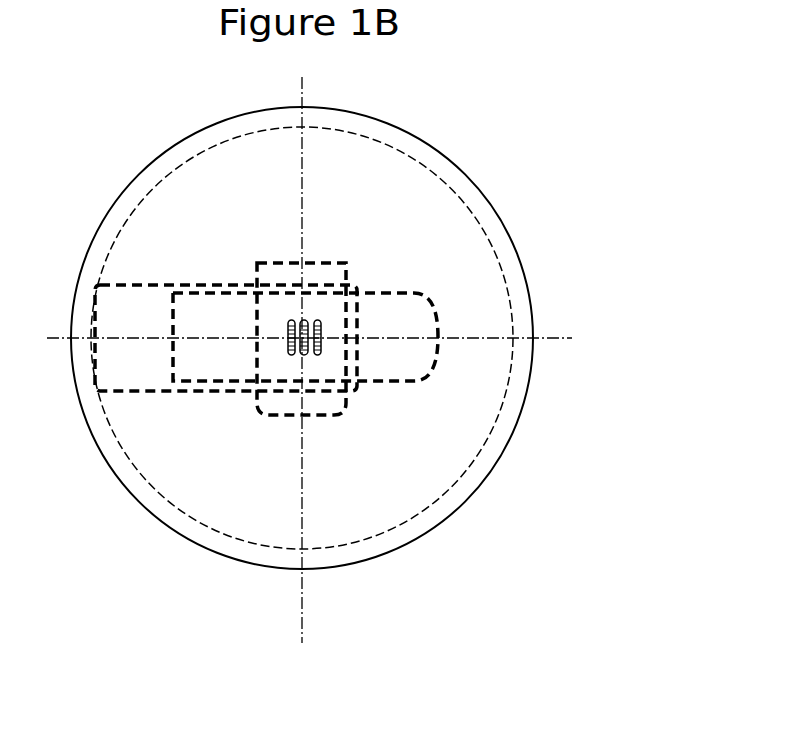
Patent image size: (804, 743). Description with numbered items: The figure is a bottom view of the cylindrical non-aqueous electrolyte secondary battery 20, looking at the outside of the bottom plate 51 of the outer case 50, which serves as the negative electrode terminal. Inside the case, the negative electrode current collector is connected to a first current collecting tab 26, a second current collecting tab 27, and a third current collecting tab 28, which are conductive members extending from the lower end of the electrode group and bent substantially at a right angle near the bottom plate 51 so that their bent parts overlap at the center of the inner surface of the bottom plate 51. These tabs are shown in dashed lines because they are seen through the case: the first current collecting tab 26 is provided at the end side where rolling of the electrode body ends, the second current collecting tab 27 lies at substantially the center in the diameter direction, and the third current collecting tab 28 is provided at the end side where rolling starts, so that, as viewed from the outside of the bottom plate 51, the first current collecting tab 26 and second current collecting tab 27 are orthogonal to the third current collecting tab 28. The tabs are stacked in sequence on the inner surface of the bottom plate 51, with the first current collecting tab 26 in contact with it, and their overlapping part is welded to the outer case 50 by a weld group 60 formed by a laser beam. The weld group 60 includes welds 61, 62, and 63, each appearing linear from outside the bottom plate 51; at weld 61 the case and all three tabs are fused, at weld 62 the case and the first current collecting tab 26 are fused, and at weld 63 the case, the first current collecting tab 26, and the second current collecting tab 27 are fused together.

The non-aqueous electrolyte secondary battery 20 is at (543, 163).
The outer case 50 is at (531, 290).
The bottom plate 51 is at (437, 237).
The first current collecting tab 26 is at (166, 394).
The second current collecting tab 27 is at (400, 387).
The third current collecting tab 28 is at (325, 252).
The weld group 60 is at (250, 426).
The weld 61 is at (288, 345).
The weld 62 is at (317, 355).
The weld 63 is at (301, 355).